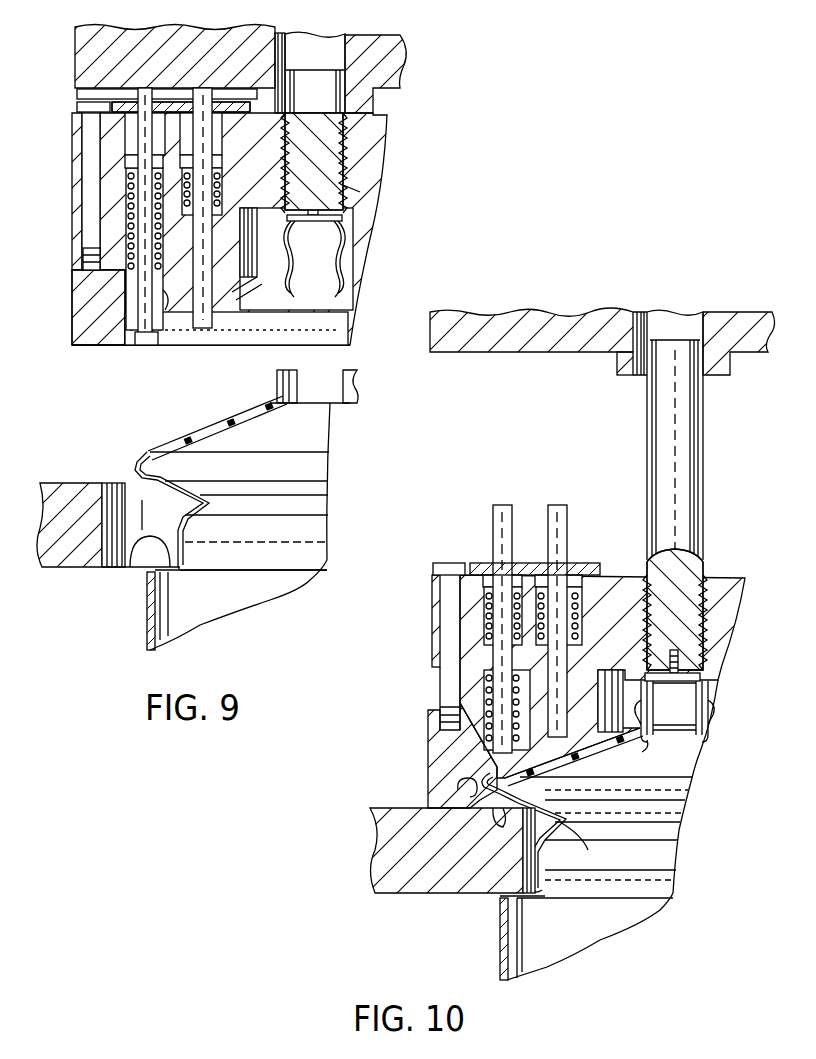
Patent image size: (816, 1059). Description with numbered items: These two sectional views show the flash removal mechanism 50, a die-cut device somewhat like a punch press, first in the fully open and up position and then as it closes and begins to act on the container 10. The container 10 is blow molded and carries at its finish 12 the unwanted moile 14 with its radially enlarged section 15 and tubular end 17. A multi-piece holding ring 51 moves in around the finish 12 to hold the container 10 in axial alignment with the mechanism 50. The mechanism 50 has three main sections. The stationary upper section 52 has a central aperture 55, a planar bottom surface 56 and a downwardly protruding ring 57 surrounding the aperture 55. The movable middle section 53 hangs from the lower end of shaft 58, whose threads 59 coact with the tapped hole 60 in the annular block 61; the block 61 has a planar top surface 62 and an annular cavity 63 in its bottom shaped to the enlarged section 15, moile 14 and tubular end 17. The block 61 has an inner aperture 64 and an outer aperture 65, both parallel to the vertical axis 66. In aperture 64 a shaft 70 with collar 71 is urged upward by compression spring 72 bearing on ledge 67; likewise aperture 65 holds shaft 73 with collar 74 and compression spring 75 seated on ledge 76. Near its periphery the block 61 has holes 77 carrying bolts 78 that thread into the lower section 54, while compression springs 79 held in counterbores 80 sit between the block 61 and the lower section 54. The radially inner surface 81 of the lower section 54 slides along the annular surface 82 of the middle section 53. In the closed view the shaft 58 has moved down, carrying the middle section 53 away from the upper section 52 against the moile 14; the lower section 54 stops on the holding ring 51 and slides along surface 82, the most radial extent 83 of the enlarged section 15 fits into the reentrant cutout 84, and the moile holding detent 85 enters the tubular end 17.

In FIG. 9, the container 10 is at (147, 630).
In FIG. 10, the container 10 is at (500, 950).
In FIG. 9, the finish portion 12 is at (127, 570).
In FIG. 10, the finish portion 12 is at (503, 880).
In FIG. 9, the moile 14 is at (330, 424).
In FIG. 10, the moile 14 is at (592, 752).
In FIG. 9, the radially enlarged section 15 is at (148, 452).
In FIG. 10, the radially enlarged section 15 is at (685, 794).
In FIG. 9, the tubular end 17 is at (335, 385).
In FIG. 10, the tubular end 17 is at (622, 701).
In FIG. 9, the flash removal mechanism 50 is at (404, 78).
In FIG. 10, the flash removal mechanism 50 is at (688, 307).
In FIG. 9, the holding ring 51 is at (40, 560).
In FIG. 10, the holding ring 51 is at (430, 895).
In FIG. 9, the upper section 52 is at (75, 58).
In FIG. 10, the upper section 52 is at (552, 353).
In FIG. 9, the middle section 53 is at (372, 202).
In FIG. 10, the middle section 53 is at (432, 606).
In FIG. 9, the lower section 54 is at (90, 346).
In FIG. 10, the lower section 54 is at (430, 772).
In FIG. 9, the aperture 55 is at (284, 30).
In FIG. 9, the bottom surface 56 is at (77, 98).
In FIG. 9, the ring 57 is at (290, 78).
In FIG. 9, the shaft 58 is at (300, 72).
In FIG. 10, the shaft 58 is at (700, 543).
In FIG. 9, the threads 59 is at (345, 150).
In FIG. 9, the tapped hole 60 is at (345, 165).
In FIG. 9, the block 61 is at (352, 190).
In FIG. 9, the top surface 62 is at (380, 114).
In FIG. 10, the top surface 62 is at (630, 575).
In FIG. 9, the annular cavity 63 is at (354, 246).
In FIG. 9, the aperture 64 is at (222, 128).
In FIG. 9, the aperture 65 is at (158, 132).
In FIG. 9, the vertical axis 66 is at (318, 332).
In FIG. 9, the ledge 67 is at (240, 224).
In FIG. 9, the shaft 70 is at (212, 306).
In FIG. 9, the collar 71 is at (222, 162).
In FIG. 9, the compression spring 72 is at (222, 186).
In FIG. 9, the shaft 73 is at (156, 348).
In FIG. 9, the collar 74 is at (128, 162).
In FIG. 9, the compression spring 75 is at (128, 180).
In FIG. 9, the ledge 76 is at (133, 196).
In FIG. 9, the holes 77 is at (88, 236).
In FIG. 9, the bolts 78 is at (88, 252).
In FIG. 9, the compression springs 79 is at (130, 278).
In FIG. 9, the counterbores 80 is at (130, 290).
In FIG. 9, the radially inner surface 81 is at (238, 293).
In FIG. 9, the annular surface 82 is at (167, 300).
In FIG. 10, the annular surface 82 is at (566, 824).
In FIG. 10, the most radial extent 83 is at (497, 812).
In FIG. 10, the reentrant cutout 84 is at (457, 788).
In FIG. 10, the moile holding detent 85 is at (652, 745).